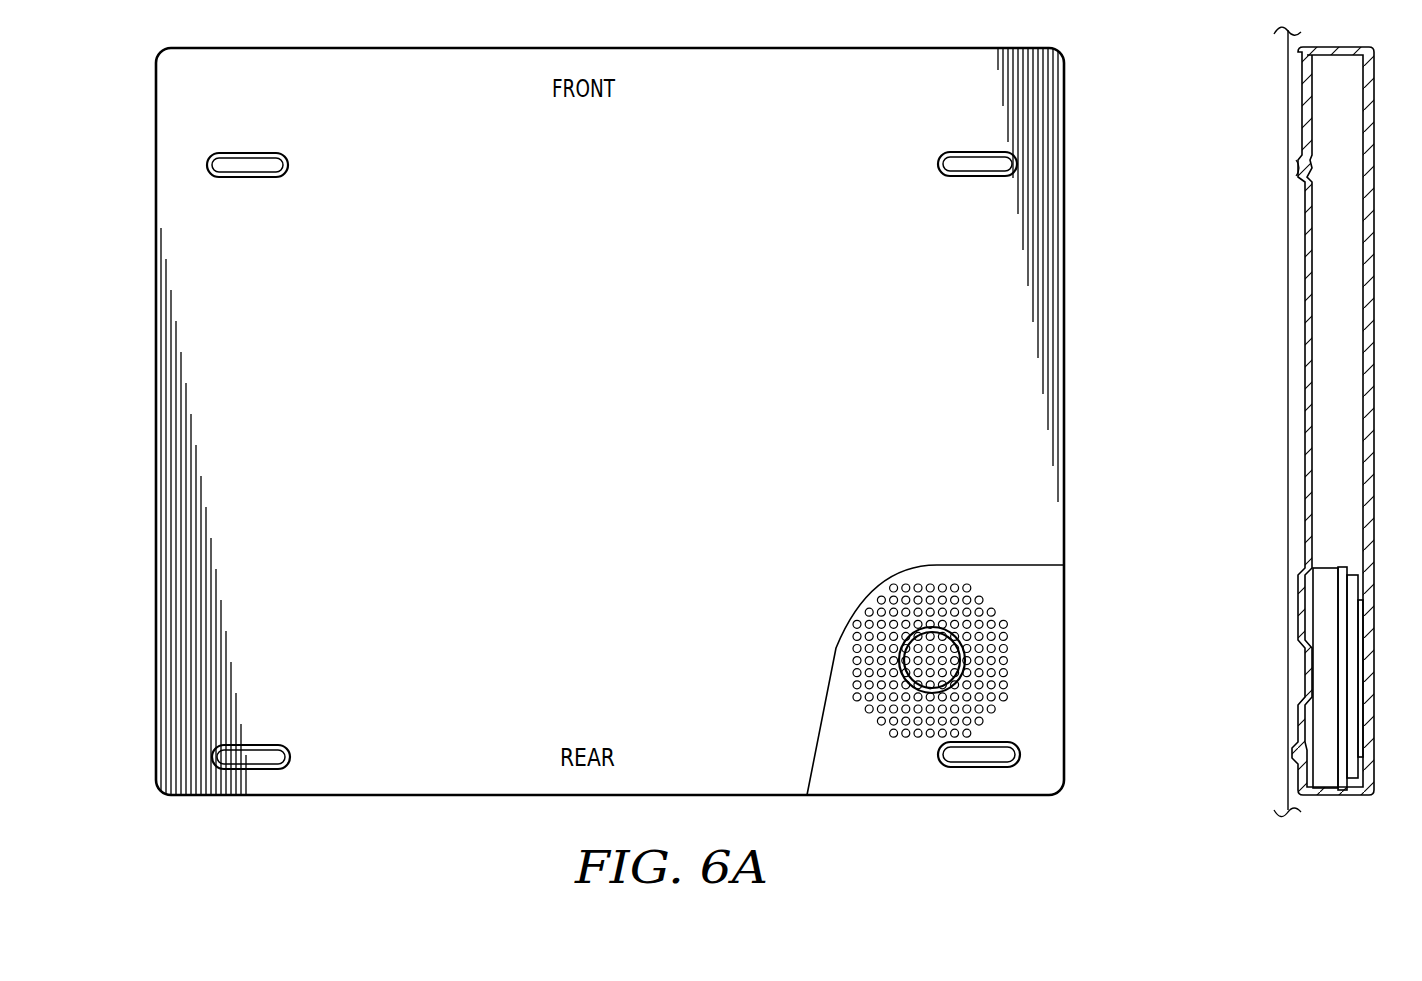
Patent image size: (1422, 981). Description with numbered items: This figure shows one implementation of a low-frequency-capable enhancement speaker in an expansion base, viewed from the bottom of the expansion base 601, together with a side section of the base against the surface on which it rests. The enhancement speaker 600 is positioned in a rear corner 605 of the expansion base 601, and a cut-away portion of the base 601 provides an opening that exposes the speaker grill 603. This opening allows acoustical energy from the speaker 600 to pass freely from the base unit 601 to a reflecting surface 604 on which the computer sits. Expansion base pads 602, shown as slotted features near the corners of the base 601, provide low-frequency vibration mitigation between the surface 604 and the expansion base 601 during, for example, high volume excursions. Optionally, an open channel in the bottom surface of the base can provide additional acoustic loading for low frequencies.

The enhancement speaker 600 is at (973, 658).
The expansion base 601 is at (1065, 237).
The expansion base pads 602 is at (972, 152).
The speaker grill 603 is at (1032, 624).
The reflecting surface 604 is at (1287, 62).
The rear corner 605 is at (847, 574).